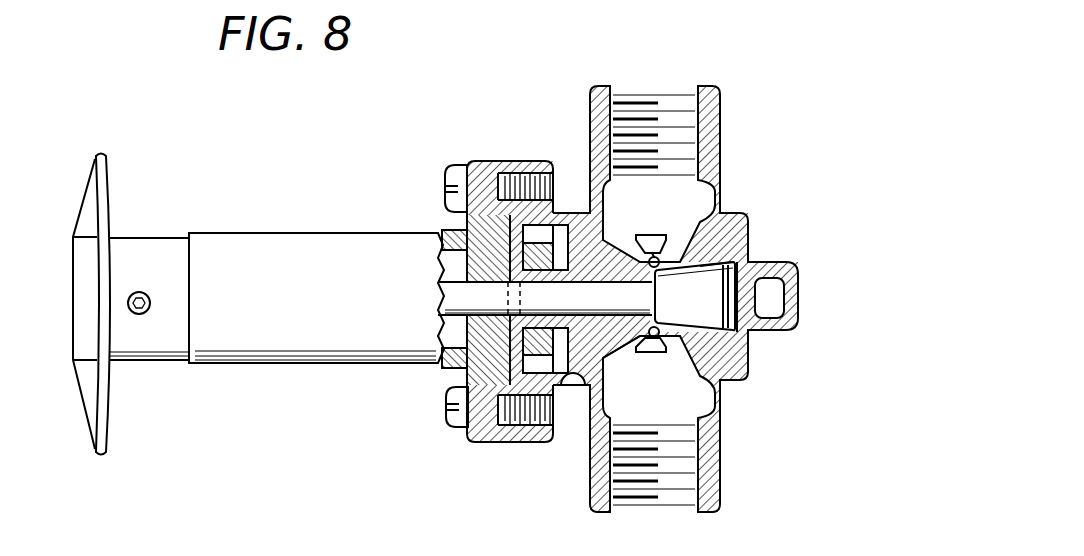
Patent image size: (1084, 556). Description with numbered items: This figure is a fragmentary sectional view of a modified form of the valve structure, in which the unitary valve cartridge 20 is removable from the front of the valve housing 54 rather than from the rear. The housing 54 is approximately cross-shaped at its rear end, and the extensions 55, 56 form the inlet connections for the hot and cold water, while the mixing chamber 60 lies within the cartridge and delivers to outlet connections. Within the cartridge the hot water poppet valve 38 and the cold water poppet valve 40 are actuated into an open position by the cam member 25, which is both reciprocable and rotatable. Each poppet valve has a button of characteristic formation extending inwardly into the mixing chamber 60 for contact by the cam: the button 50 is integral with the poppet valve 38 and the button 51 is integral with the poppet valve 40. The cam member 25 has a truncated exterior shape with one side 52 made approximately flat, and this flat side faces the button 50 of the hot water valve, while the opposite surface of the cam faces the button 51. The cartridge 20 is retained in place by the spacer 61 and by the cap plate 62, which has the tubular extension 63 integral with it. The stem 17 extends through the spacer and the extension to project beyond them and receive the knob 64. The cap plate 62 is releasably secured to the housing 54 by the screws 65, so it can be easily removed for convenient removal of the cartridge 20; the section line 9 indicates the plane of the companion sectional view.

The section line 9- 9 is at (37, 295).
The stem 17 is at (470, 290).
The valve cartridge 20 is at (707, 350).
The cam member 25 is at (712, 319).
The hot water poppet valve 38 is at (721, 212).
The cold water poppet valve 40 is at (643, 345).
The button 50 is at (670, 258).
The button 51 is at (656, 338).
The flat side 52 is at (708, 266).
The valve housing 54 is at (730, 203).
The extension 55 is at (590, 126).
The extension 56 is at (707, 467).
The mixing chamber 60 is at (580, 253).
The spacer 61 is at (513, 357).
The cap plate 62 is at (480, 442).
The tubular extension 63 is at (316, 298).
The knob 64 is at (86, 222).
The screws 65 is at (448, 196).